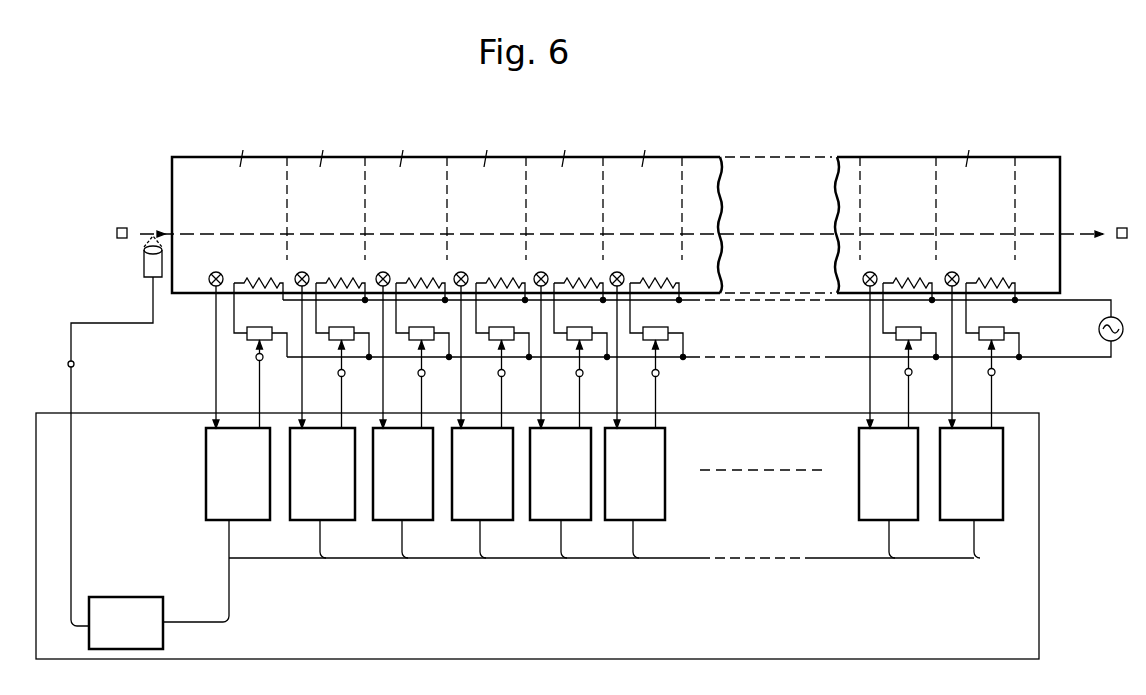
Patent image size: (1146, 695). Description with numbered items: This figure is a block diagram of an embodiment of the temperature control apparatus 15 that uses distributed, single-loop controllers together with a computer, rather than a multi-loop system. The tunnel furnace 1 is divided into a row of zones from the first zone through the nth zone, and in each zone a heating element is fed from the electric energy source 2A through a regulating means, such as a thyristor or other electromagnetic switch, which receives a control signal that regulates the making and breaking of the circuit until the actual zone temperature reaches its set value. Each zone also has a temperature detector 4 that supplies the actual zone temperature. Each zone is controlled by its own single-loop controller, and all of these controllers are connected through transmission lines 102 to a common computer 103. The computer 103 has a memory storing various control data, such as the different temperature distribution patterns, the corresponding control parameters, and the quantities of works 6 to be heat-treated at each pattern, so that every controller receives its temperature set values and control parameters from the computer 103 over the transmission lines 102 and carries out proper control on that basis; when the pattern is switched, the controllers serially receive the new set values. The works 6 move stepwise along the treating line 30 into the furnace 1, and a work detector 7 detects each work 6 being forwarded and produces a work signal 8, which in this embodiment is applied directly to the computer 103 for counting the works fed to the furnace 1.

The furnace 1 is at (1045, 162).
The energy source 2A is at (1120, 342).
The temperature detector 4 is at (210, 286).
The work 6 is at (117, 228).
The work detector 7 is at (145, 262).
The work signal 8 is at (68, 364).
The temperature control apparatus 15 is at (1040, 538).
The treating line 30 is at (176, 236).
The transmission lines 102 is at (601, 544).
The computer 103 is at (145, 641).